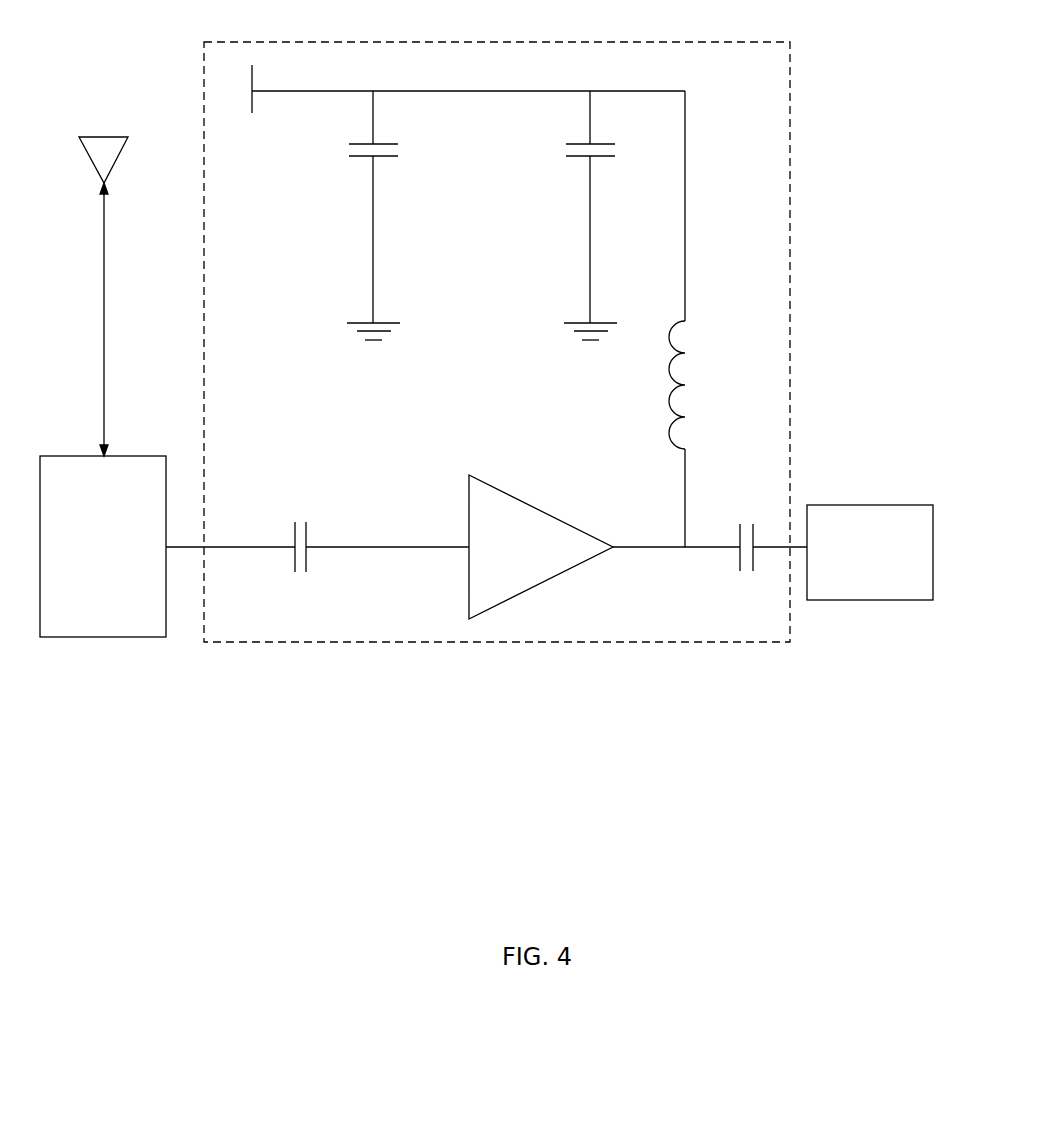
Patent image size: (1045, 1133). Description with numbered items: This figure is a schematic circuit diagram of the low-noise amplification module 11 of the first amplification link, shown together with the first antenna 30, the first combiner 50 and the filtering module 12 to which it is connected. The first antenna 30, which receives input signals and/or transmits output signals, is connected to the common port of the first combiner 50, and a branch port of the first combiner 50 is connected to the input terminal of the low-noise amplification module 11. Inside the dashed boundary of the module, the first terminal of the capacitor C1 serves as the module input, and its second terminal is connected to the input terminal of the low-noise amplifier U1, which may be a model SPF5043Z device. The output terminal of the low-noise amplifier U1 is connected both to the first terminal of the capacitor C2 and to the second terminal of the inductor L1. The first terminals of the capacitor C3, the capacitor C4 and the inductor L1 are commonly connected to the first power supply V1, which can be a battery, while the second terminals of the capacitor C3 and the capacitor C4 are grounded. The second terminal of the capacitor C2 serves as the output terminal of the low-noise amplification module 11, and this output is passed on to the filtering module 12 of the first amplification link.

The low-noise amplification module 11 is at (503, 42).
The filtering module 12 is at (870, 505).
The first antenna 30 is at (108, 137).
The first combiner 50 is at (108, 456).
The capacitor C1 is at (300, 572).
The capacitor C2 is at (757, 579).
The capacitor C3 is at (404, 215).
The capacitor C4 is at (598, 215).
The inductor L1 is at (709, 319).
The low-noise amplifier U1 is at (541, 547).
The first power supply V1 is at (449, 89).